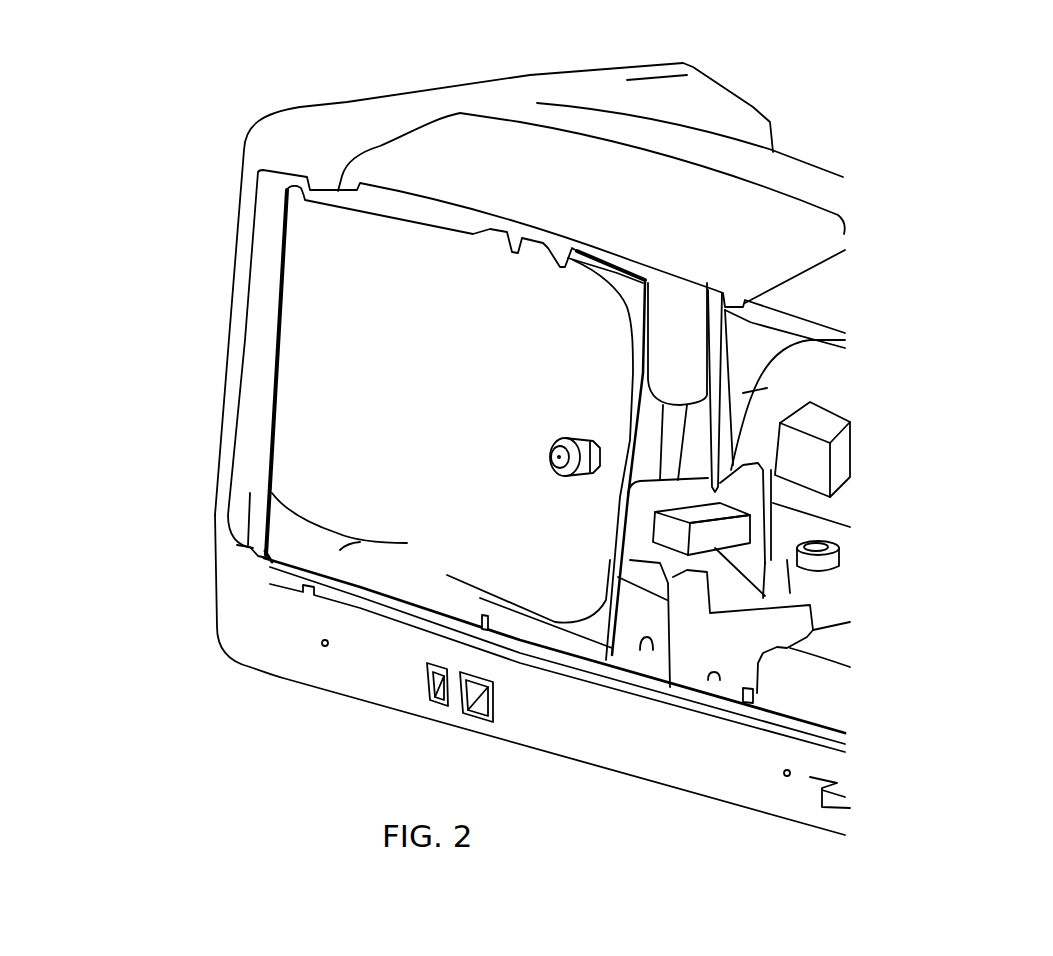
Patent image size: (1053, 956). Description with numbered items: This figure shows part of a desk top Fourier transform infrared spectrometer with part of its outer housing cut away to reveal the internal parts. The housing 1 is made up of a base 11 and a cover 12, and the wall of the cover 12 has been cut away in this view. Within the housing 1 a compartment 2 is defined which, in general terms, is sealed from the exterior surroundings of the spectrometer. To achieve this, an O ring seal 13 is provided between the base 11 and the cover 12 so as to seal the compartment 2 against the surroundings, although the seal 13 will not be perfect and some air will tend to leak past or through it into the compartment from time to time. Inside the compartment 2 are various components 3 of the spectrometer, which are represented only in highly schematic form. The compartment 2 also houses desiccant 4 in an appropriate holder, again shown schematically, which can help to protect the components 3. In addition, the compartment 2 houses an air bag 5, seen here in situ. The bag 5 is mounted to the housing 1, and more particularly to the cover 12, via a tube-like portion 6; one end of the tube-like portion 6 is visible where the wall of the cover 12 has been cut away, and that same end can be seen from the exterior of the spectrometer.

The housing 1 is at (247, 348).
The compartment 2 is at (836, 378).
The components 3 is at (670, 540).
The desiccant 4 is at (847, 455).
The air bag 5 is at (382, 497).
The tube-like portion 6 is at (553, 467).
The base 11 is at (233, 627).
The cover 12 is at (233, 256).
The O ring seal 13 is at (262, 567).